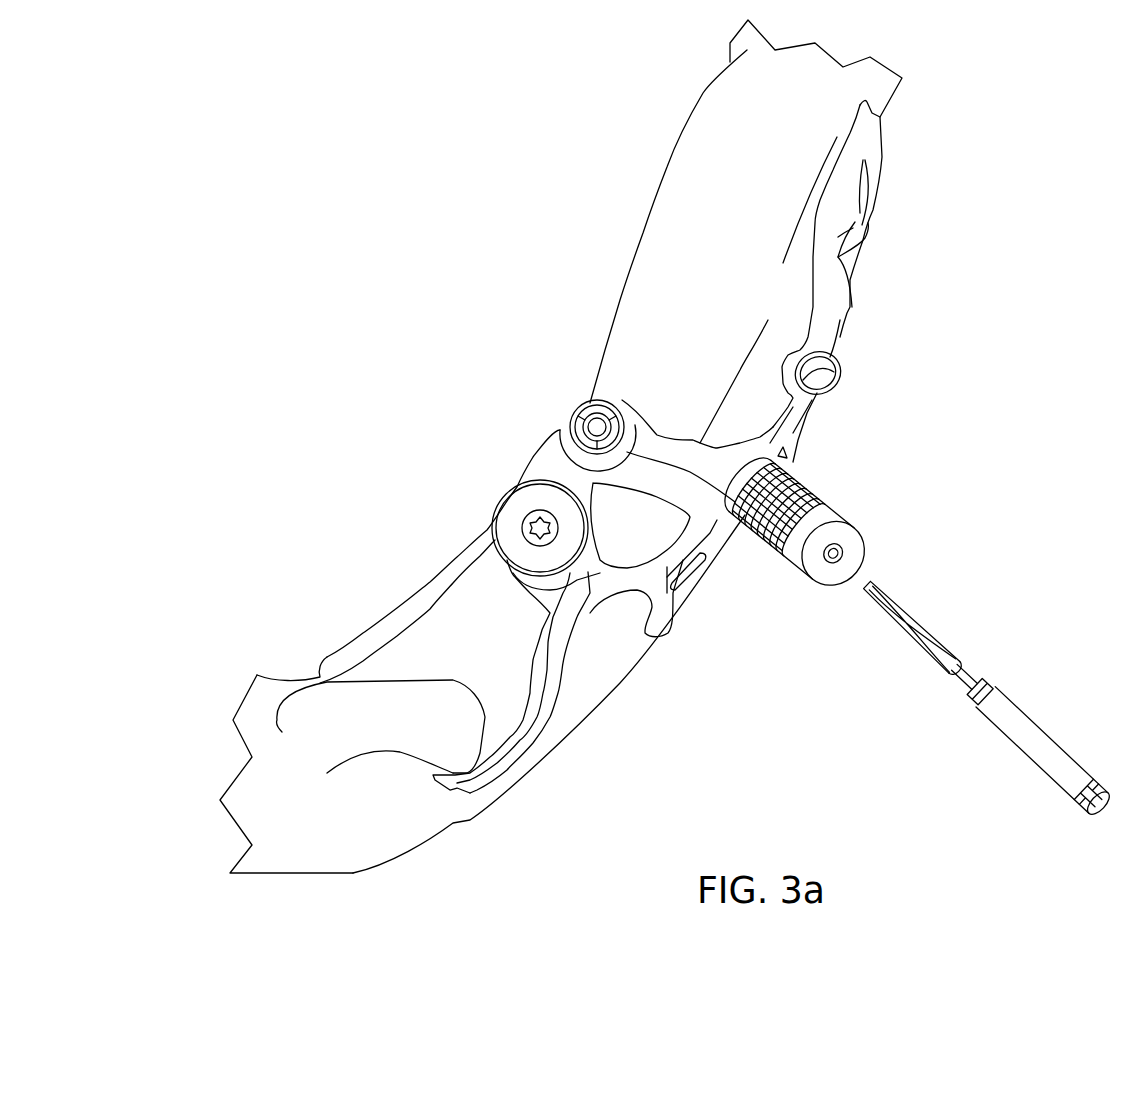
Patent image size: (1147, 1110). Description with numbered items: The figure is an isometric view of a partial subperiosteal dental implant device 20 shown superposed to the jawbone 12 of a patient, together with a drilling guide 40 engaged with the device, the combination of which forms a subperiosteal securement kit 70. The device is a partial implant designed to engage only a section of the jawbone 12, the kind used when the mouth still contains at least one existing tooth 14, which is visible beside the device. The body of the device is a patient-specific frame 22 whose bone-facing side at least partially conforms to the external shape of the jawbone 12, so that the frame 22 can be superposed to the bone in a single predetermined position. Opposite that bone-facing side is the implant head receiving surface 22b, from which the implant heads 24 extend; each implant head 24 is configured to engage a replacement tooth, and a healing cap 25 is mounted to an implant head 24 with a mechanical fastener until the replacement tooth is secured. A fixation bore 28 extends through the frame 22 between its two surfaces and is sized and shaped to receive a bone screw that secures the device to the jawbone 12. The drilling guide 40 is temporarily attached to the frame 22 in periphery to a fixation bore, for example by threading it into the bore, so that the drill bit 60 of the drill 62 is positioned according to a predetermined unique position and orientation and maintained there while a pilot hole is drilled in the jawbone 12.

The jawbone 12 is at (653, 288).
The existing tooth 14 is at (440, 698).
The subperiosteal dental implant device 20 is at (669, 449).
The frame 22 is at (657, 590).
The implant head receiving surface 22b is at (730, 477).
The implant head 24 is at (583, 407).
The healing cap 25 is at (515, 508).
The fixation bore 28 is at (842, 367).
The drilling guide 40 is at (825, 492).
The drill bit 60 is at (940, 652).
The drill 62 is at (1035, 743).
The subperiosteal securement kit 70 is at (942, 373).